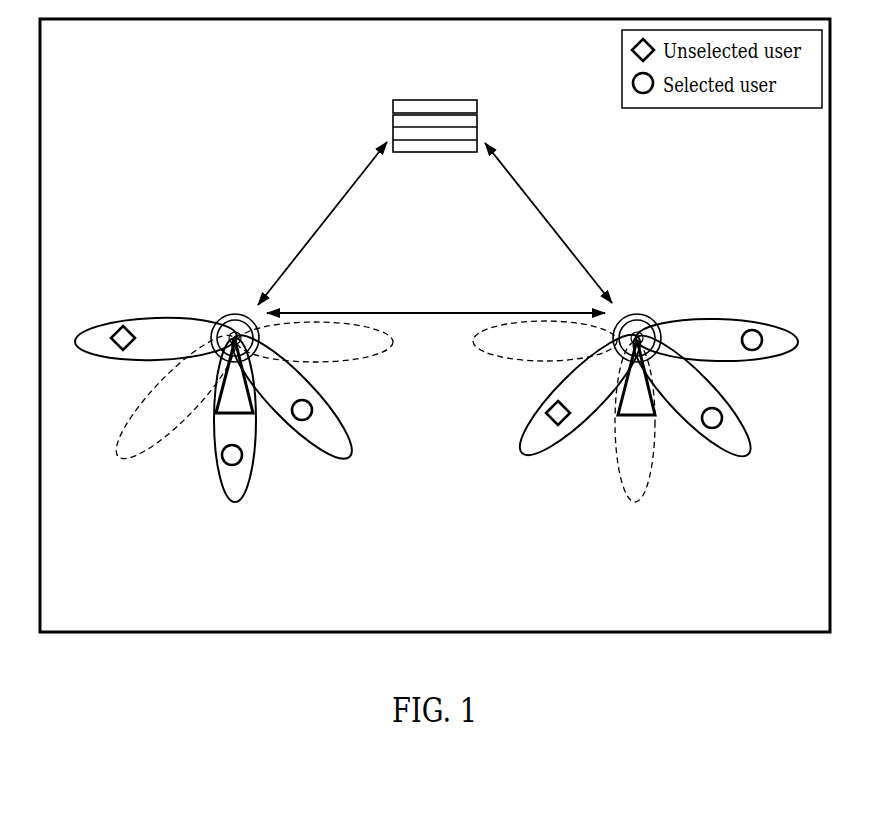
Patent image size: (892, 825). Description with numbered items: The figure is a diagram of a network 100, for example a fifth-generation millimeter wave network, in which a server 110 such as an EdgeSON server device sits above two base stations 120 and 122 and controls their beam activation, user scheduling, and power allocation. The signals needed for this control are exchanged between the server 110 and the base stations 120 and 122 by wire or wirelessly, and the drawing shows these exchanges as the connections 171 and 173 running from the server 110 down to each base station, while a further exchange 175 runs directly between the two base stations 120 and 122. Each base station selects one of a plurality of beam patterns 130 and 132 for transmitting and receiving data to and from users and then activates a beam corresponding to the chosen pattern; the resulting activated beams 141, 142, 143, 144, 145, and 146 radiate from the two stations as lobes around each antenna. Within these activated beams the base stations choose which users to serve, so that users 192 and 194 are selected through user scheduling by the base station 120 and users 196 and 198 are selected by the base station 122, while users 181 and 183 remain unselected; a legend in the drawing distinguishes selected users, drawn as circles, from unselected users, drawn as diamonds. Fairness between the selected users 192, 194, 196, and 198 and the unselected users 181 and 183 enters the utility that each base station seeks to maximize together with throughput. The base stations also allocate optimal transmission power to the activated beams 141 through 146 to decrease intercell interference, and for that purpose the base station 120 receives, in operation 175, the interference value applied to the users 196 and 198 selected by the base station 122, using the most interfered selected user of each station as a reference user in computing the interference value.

The network 100 is at (551, 616).
The server 110 is at (453, 81).
The base station 120 is at (250, 417).
The base station 122 is at (620, 420).
The beam pattern 130 is at (251, 295).
The beam pattern 132 is at (653, 295).
The activated beam 141 is at (112, 357).
The activated beam 142 is at (245, 490).
The activated beam 143 is at (350, 440).
The activated beam 144 is at (523, 435).
The activated beam 145 is at (706, 447).
The activated beam 146 is at (712, 318).
The link between server and first base station 171 is at (324, 216).
The link between server and second base station 173 is at (545, 217).
The operation of receiving interference value 175 is at (435, 310).
The unselected user 181 is at (113, 327).
The unselected user 183 is at (548, 408).
The selected user 192 is at (215, 458).
The selected user 194 is at (312, 404).
The selected user 196 is at (730, 412).
The selected user 198 is at (757, 330).